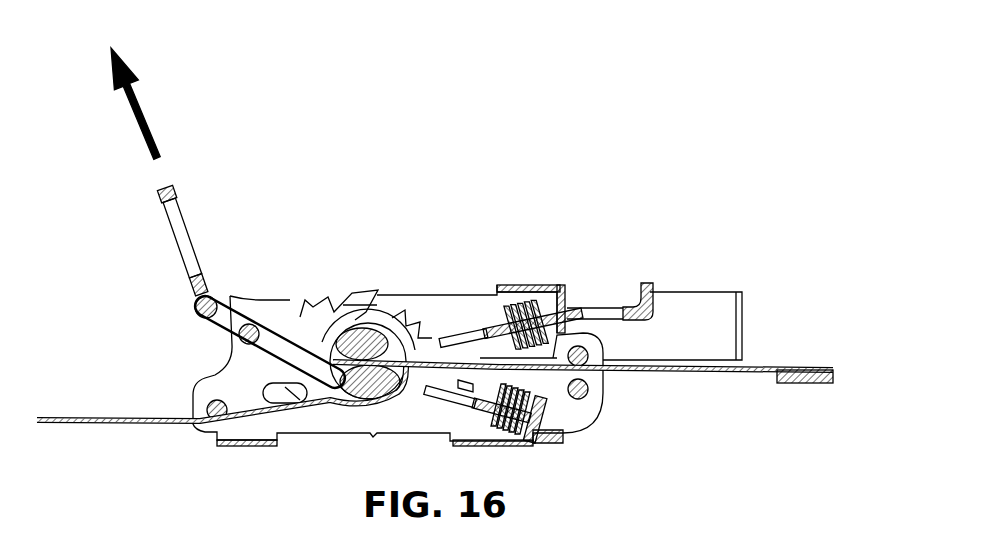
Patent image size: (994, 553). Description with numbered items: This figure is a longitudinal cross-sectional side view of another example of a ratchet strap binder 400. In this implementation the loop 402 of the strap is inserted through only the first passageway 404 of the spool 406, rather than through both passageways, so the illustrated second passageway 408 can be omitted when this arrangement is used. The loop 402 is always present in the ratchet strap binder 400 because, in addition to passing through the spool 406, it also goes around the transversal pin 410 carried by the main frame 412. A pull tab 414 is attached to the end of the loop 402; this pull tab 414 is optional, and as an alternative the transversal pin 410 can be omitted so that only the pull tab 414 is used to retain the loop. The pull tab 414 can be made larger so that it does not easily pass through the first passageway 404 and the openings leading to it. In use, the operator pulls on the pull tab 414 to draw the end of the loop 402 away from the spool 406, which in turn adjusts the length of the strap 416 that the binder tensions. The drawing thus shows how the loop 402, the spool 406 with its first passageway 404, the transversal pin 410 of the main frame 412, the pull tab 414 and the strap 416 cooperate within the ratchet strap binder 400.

The ratchet strap binder 400 is at (306, 221).
The loop 402 is at (208, 330).
The first passageway 404 is at (345, 380).
The spool 406 is at (395, 338).
The second passageway 408 is at (353, 335).
The transversal pin 410 is at (253, 325).
The main frame 412 is at (232, 377).
The pull tab 414 is at (175, 193).
The strap 416 is at (673, 370).